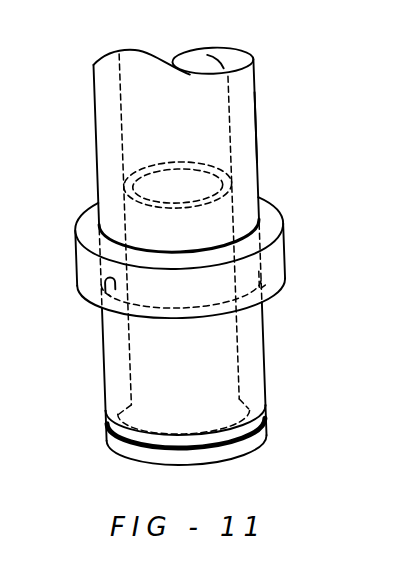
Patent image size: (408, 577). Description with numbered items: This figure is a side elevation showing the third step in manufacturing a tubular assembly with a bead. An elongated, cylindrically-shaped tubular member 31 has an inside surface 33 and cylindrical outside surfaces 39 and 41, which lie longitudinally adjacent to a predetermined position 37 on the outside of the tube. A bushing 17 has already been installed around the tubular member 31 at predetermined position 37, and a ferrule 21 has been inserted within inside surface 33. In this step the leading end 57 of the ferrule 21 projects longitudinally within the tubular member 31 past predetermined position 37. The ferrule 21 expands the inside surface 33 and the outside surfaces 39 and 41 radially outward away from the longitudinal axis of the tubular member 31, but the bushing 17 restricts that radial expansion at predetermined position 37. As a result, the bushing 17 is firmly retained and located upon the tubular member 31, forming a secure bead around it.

The bushing 17 is at (287, 243).
The ferrule 21 is at (252, 457).
The tubular member 31 is at (255, 80).
The inside surface 33 is at (216, 58).
The predetermined position 37 is at (104, 283).
The cylindrical outside surface 39 is at (255, 130).
The cylindrical outside surface 41 is at (265, 360).
The leading end 57 is at (148, 172).